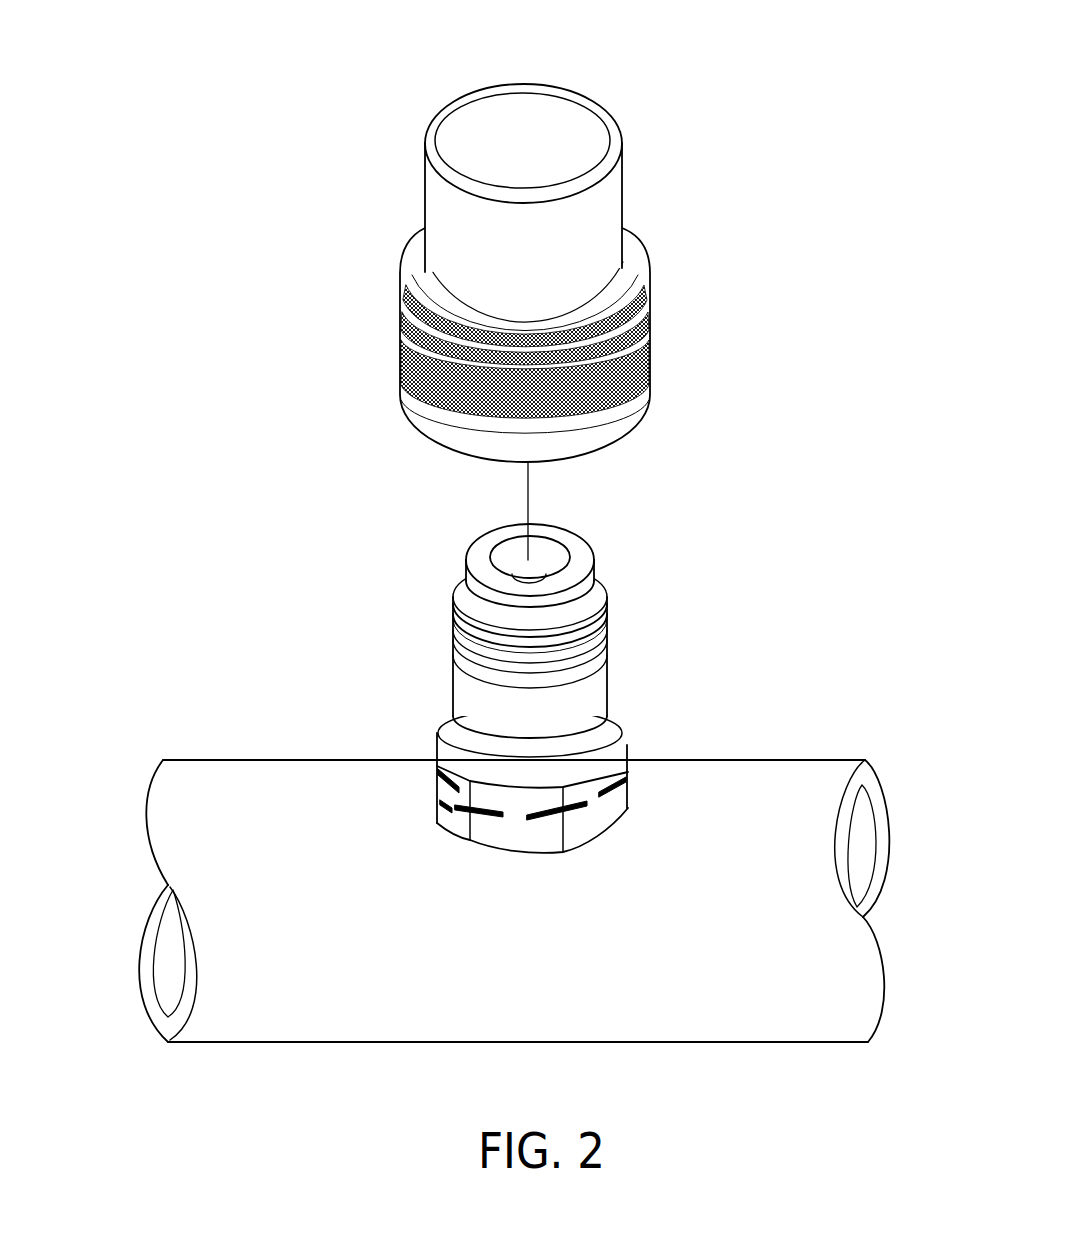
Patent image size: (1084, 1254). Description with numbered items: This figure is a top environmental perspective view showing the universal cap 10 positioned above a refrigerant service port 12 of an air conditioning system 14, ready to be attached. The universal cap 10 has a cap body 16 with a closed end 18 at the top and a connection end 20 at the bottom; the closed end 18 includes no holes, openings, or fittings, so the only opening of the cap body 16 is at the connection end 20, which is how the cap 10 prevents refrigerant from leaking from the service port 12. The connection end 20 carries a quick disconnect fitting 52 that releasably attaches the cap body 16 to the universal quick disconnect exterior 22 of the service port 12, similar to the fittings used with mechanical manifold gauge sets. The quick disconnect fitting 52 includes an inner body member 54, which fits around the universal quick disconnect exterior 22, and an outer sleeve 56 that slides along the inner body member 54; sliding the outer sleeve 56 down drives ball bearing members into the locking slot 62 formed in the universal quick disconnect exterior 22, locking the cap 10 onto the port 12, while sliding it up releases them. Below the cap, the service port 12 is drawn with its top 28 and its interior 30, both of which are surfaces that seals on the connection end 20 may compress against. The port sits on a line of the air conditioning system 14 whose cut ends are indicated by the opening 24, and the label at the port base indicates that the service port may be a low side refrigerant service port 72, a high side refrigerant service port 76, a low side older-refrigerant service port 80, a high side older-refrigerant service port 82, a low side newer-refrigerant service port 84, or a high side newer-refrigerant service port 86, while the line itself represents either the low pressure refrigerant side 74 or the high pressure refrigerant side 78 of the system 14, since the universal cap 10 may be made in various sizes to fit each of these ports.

The universal cap 10 is at (612, 426).
The refrigerant service port 12 is at (620, 656).
The air conditioning system 14 is at (490, 853).
The cap body 16 is at (544, 231).
The closed end 18 is at (483, 70).
The connection end 20 is at (546, 333).
The universal quick disconnect exterior 22 is at (665, 656).
The pipe opening 24 is at (160, 940).
The top 28 is at (577, 548).
The interior 30 is at (508, 560).
The quick disconnect fitting 52 is at (612, 345).
The inner body member 54 is at (623, 272).
The outer sleeve 56 is at (650, 343).
The locking slot 62 is at (452, 633).
The low side refrigerant service port 72 is at (699, 742).
The low pressure refrigerant side 74 is at (876, 810).
The high side refrigerant service port 76 is at (479, 811).
The high pressure refrigerant side 78 is at (815, 770).
The low side HFC-134a refrigerant service port 80 is at (557, 810).
The high side HFC-134a refrigerant service port 82 is at (448, 781).
The low side 1234yf refrigerant service port 84 is at (612, 787).
The high side 1234yf refrigerant service port 86 is at (446, 806).